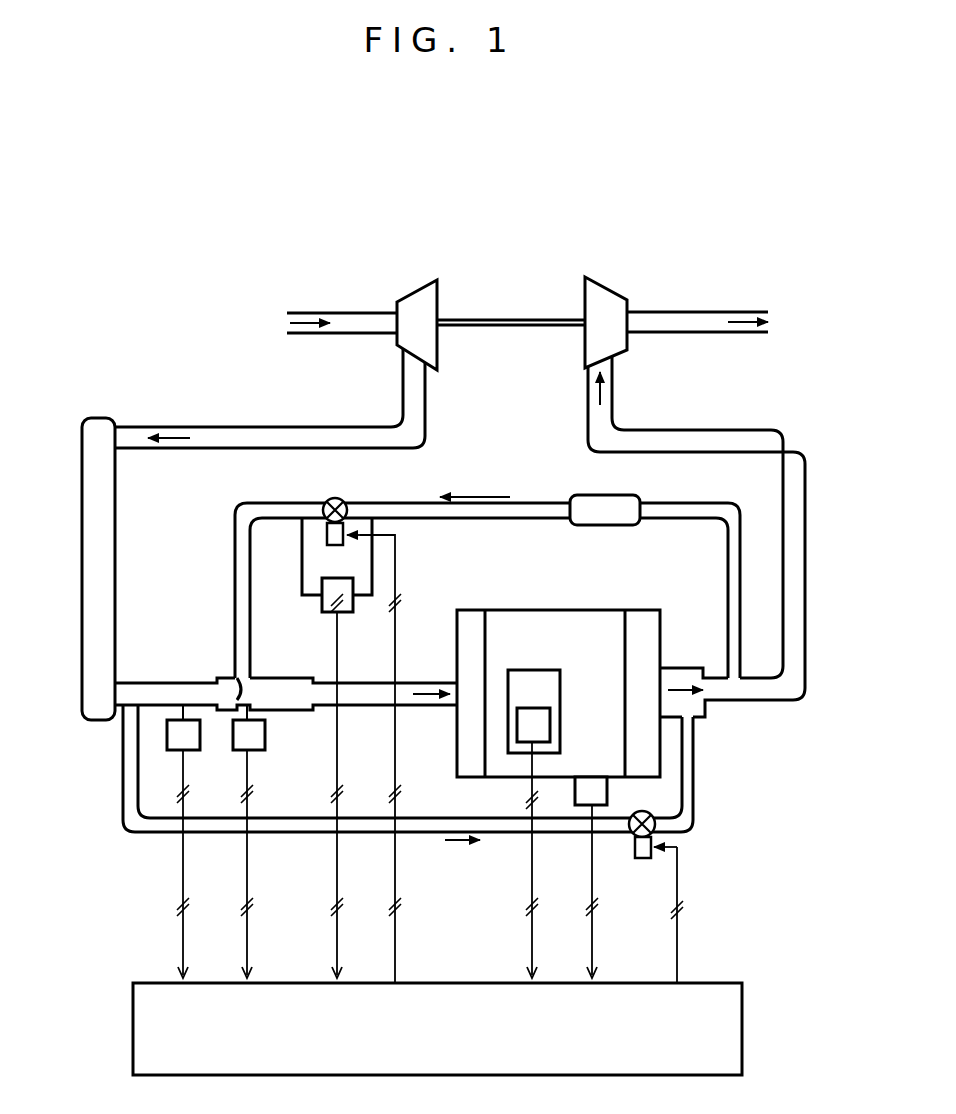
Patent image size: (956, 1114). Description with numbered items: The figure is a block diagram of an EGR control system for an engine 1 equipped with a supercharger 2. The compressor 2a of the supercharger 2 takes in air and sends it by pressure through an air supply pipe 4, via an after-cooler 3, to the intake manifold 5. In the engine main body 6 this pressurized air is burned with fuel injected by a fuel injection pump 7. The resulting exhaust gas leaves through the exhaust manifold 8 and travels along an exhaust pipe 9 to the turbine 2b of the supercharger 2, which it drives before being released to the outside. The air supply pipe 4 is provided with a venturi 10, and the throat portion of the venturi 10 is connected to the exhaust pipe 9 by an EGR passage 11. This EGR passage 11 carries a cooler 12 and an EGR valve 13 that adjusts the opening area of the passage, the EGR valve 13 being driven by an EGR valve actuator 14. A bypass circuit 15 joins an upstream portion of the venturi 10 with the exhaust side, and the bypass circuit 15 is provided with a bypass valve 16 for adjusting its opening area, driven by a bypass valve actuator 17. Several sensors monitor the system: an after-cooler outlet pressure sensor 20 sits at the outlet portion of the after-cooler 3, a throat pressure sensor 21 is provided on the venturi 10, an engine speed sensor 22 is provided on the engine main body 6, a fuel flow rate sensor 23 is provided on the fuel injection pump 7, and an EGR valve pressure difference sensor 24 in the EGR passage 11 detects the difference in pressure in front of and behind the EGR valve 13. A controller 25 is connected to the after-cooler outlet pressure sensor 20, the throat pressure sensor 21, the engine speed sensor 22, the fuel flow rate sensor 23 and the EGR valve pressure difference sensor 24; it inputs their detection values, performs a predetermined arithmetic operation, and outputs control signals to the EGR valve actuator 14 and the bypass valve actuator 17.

The engine 1 is at (297, 243).
The supercharger 2 is at (586, 218).
The compressor 2a is at (425, 303).
The turbine 2b is at (592, 300).
The after-cooler 3 is at (100, 432).
The air supply pipe 4 is at (157, 690).
The intake manifold 5 is at (463, 620).
The engine main body 6 is at (592, 620).
The fuel injection pump 7 is at (546, 672).
The exhaust manifold 8 is at (647, 630).
The exhaust pipe 9 is at (770, 689).
The venturi 10 is at (240, 690).
The EGR passage 11 is at (528, 505).
The cooler 12 is at (622, 505).
The EGR valve 13 is at (345, 502).
The EGR valve actuator 14 is at (320, 534).
The bypass circuit 15 is at (230, 832).
The bypass valve 16 is at (656, 822).
The bypass valve actuator 17 is at (645, 858).
The after-cooler outlet pressure sensor 20 is at (172, 733).
The throat pressure sensor 21 is at (243, 742).
The engine speed sensor 22 is at (583, 803).
The fuel flow rate sensor 23 is at (532, 722).
The EGR valve pressure difference sensor 24 is at (325, 600).
The controller 25 is at (722, 982).